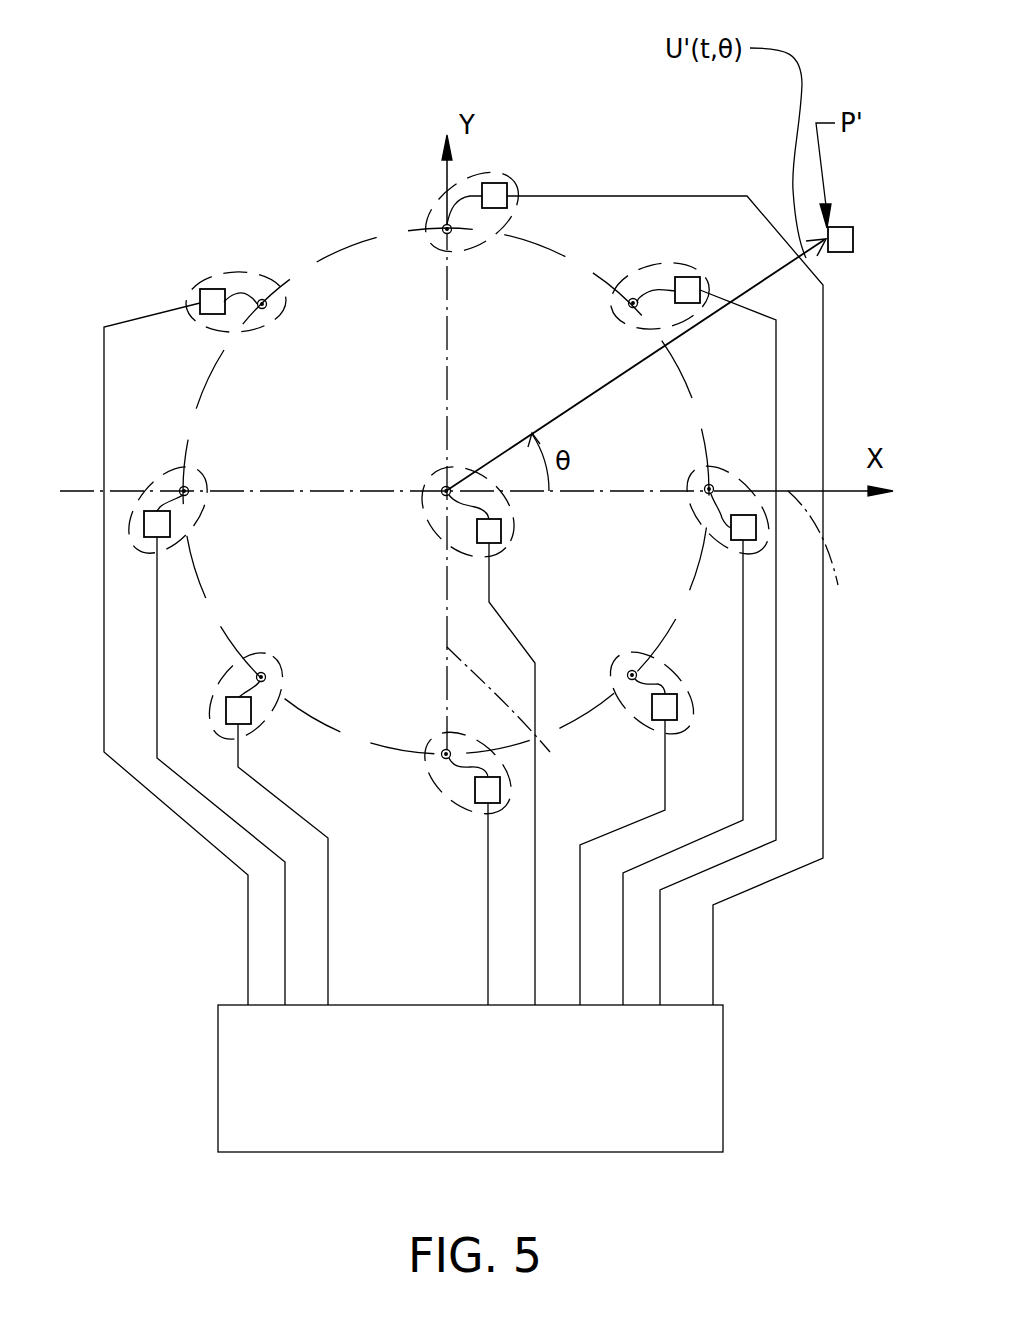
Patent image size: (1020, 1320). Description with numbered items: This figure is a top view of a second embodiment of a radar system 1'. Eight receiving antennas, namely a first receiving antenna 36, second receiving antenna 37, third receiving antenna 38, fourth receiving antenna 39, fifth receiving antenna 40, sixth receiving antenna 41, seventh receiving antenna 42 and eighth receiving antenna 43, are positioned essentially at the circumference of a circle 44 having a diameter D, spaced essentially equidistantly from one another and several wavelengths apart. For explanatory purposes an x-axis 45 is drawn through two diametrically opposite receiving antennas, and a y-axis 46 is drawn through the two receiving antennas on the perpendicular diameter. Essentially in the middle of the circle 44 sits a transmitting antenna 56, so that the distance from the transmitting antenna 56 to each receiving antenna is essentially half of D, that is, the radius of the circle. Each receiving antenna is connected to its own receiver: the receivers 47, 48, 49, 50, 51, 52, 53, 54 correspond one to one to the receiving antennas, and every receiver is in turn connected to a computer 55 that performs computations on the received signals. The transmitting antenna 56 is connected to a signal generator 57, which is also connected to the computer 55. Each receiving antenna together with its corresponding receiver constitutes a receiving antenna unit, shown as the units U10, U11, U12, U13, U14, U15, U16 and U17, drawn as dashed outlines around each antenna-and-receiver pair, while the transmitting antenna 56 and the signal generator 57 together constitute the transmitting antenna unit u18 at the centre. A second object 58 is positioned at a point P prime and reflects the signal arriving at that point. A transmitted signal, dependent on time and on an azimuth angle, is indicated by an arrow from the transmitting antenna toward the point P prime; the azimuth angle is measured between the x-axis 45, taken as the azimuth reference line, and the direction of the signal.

The radar system 1' is at (179, 66).
The first receiving antenna 36 is at (708, 490).
The second receiving antenna 37 is at (633, 303).
The third receiving antenna 38 is at (445, 229).
The fourth receiving antenna 39 is at (264, 305).
The fifth receiving antenna 40 is at (186, 492).
The sixth receiving antenna 41 is at (262, 677).
The seventh receiving antenna 42 is at (445, 755).
The eighth receiving antenna 43 is at (640, 670).
The circle 44 is at (335, 250).
The x-axis 45 is at (838, 586).
The y-axis 46 is at (552, 753).
The receiver 47 is at (740, 528).
The receiver 48 is at (686, 286).
The receiver 49 is at (493, 183).
The receiver 50 is at (215, 302).
The receiver 51 is at (165, 525).
The receiver 52 is at (237, 711).
The receiver 53 is at (487, 790).
The receiver 54 is at (677, 707).
The computer 55 is at (235, 1038).
The transmitting antenna 56 is at (446, 491).
The signal generator 57 is at (478, 532).
The second object 58 is at (841, 253).
The receiving antenna unit U10 is at (753, 548).
The receiving antenna unit U11 is at (688, 258).
The receiving antenna unit U12 is at (506, 168).
The receiving antenna unit U13 is at (210, 275).
The receiving antenna unit U14 is at (160, 478).
The receiving antenna unit U15 is at (215, 692).
The receiving antenna unit U16 is at (512, 805).
The receiving antenna unit U17 is at (693, 722).
The transmitting antenna unit u18 is at (461, 465).